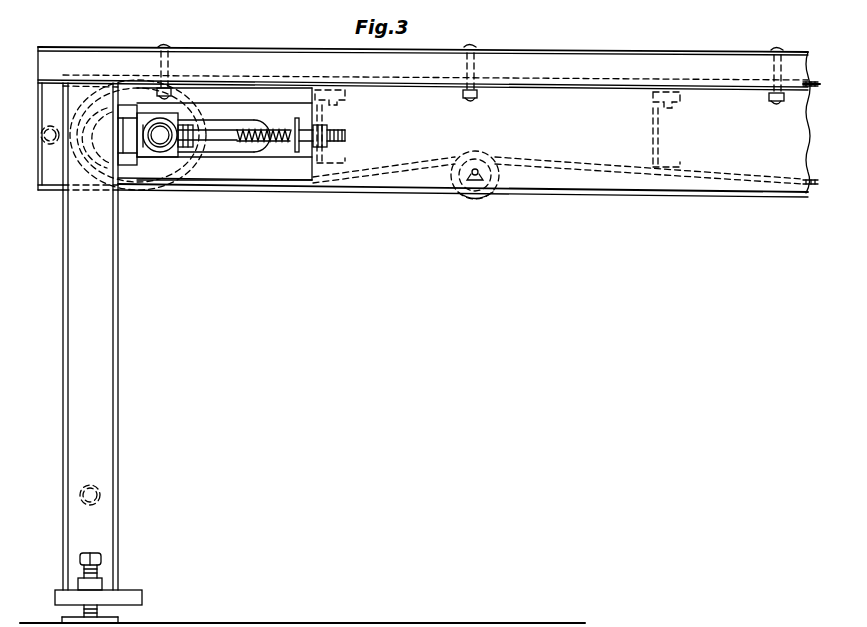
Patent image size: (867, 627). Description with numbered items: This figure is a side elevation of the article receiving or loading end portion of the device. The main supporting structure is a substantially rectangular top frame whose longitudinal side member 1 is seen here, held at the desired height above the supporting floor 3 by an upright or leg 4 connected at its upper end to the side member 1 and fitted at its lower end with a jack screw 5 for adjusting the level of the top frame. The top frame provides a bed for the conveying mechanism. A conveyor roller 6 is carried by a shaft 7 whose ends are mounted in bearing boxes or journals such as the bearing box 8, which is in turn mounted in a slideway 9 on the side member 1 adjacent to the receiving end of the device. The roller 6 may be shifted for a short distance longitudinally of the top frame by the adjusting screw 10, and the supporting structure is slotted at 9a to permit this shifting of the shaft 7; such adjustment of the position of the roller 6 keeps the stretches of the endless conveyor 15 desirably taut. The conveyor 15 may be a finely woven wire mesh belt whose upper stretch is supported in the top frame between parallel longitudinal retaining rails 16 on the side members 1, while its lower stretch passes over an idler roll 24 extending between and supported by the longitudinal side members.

The longitudinal side member 1 is at (562, 180).
The supporting floor 3 is at (485, 622).
The upright or leg 4 is at (106, 430).
The jack screw 5 is at (97, 577).
The conveyor roller 6 is at (217, 83).
The shaft 7 is at (163, 140).
The bearing box or journal 8 is at (145, 140).
The slideway 9 is at (147, 110).
The slot 9a is at (230, 147).
The adjusting screw 10 is at (287, 140).
The endless conveyor section 15 is at (810, 83).
The retaining rail 16 is at (580, 50).
The idler roll 24 is at (478, 196).